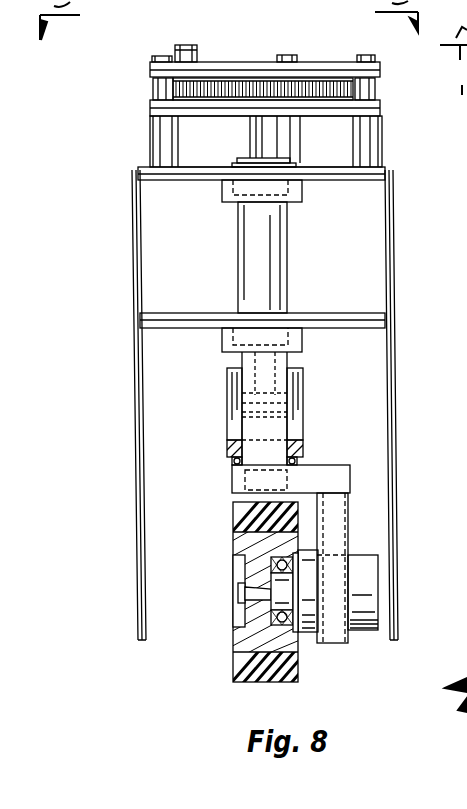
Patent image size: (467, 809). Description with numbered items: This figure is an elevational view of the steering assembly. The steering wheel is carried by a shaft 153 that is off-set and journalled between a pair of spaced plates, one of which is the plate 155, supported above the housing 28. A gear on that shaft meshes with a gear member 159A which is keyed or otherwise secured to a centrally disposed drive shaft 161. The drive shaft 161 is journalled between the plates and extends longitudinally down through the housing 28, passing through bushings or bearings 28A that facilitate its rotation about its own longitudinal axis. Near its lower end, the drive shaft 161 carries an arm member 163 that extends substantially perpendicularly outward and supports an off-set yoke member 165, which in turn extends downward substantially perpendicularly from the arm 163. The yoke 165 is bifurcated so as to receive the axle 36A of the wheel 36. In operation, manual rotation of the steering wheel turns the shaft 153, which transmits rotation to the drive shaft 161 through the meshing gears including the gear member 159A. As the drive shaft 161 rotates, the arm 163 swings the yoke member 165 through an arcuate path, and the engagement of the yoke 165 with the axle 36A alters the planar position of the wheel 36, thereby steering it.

The housing 28 is at (135, 275).
The bushings or bearings 28A is at (228, 201).
The wheel 36 is at (233, 668).
The axle 36A is at (362, 568).
The shaft 153 is at (192, 46).
The plate 155 is at (150, 70).
The gear member 159A is at (302, 90).
The drive shaft 161 is at (258, 130).
The arm member 163 is at (308, 477).
The yoke member 165 is at (332, 485).